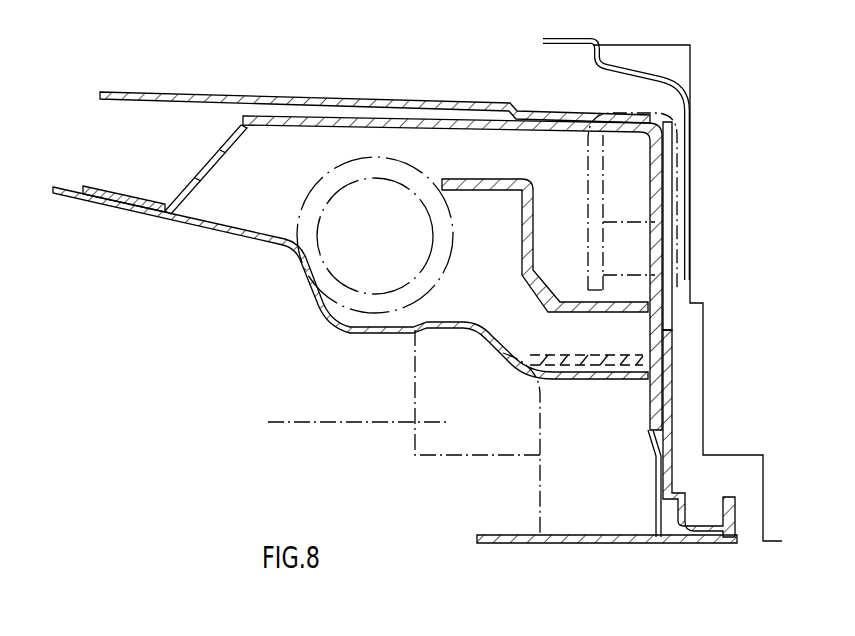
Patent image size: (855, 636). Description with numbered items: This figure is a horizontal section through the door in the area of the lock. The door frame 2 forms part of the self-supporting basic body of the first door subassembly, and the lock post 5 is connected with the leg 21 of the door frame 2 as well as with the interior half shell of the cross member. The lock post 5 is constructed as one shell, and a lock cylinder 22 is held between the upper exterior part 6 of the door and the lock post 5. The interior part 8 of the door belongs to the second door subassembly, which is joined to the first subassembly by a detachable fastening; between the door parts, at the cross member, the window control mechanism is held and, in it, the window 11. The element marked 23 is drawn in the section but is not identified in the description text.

The door frame 2 is at (357, 326).
The lock post 5 is at (647, 431).
The upper exterior part of the door 6 is at (526, 543).
The interior part of the door 8 is at (290, 99).
The window 11 is at (307, 421).
The leg of the door frame 21 is at (428, 462).
The lock cylinder 22 is at (620, 470).
The channel 23 is at (633, 175).